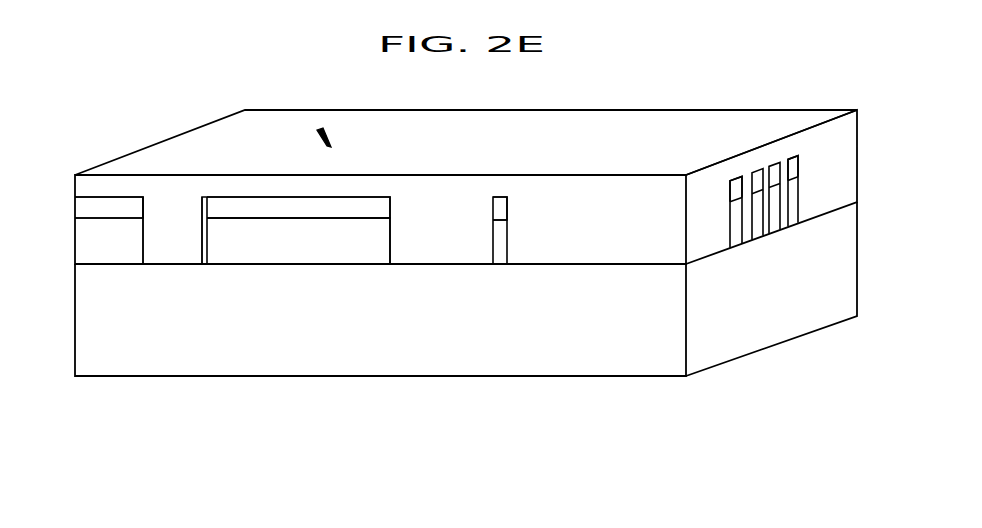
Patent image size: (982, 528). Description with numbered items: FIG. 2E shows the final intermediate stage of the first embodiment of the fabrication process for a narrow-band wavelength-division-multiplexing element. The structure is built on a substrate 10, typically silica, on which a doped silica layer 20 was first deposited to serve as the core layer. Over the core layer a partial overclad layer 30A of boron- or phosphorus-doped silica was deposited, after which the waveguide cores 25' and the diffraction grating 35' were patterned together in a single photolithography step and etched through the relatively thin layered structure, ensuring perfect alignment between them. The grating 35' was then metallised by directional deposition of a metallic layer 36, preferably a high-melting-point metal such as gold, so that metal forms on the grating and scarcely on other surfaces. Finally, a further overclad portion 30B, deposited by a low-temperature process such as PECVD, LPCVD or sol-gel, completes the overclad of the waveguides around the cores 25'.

The substrate 10 is at (113, 318).
The doped silica layer 20 is at (117, 242).
The waveguide cores 25' is at (489, 187).
The partial overclad layer 30A is at (225, 205).
The further overclad portion 30B is at (627, 242).
The diffraction grating 35' is at (328, 103).
The metallic layer 36 is at (197, 242).